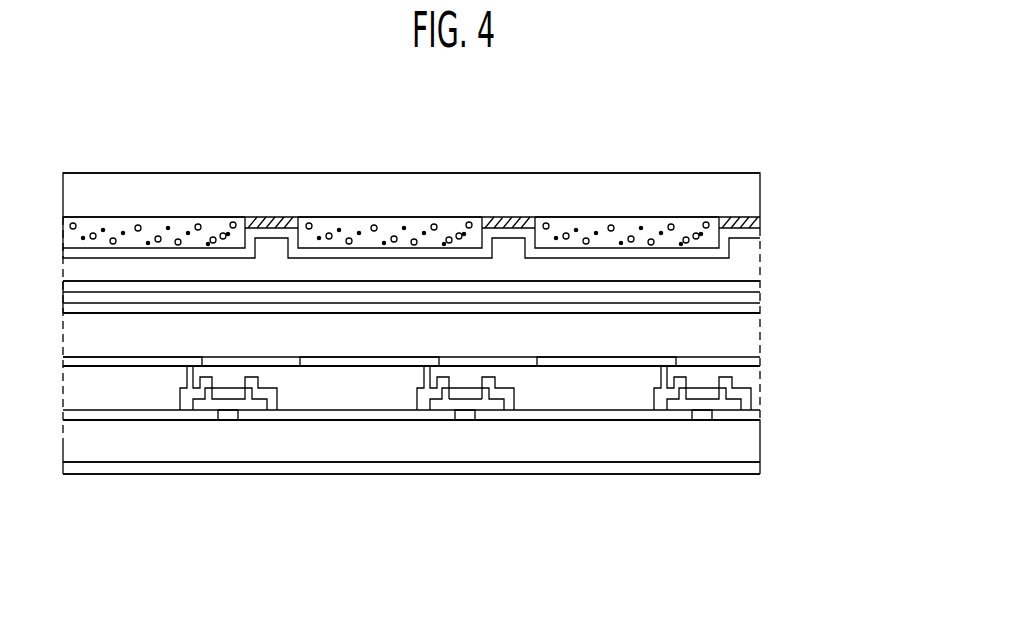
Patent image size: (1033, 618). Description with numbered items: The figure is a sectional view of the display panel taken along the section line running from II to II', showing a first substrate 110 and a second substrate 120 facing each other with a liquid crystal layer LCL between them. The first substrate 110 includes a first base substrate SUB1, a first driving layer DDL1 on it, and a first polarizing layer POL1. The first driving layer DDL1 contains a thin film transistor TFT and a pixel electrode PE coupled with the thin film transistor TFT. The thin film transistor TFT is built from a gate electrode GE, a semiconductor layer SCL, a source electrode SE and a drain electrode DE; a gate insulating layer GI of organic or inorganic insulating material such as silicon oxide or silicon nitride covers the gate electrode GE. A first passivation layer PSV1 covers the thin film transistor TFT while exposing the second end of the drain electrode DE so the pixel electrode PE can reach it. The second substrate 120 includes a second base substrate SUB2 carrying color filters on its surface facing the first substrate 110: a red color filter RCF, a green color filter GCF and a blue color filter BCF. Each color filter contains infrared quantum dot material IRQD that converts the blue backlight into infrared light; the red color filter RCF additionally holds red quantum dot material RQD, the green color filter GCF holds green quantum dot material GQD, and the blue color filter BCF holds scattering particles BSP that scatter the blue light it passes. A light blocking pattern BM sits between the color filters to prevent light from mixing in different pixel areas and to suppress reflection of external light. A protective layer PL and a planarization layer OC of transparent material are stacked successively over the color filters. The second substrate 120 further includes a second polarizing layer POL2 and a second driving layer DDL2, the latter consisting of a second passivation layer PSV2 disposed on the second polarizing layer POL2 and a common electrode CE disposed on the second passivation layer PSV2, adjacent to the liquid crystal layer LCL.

The second base substrate SUB2 is at (750, 193).
The protective layer PL is at (757, 231).
The light blocking pattern BM is at (270, 222).
The planarization layer OC is at (757, 251).
The red color filter RCF is at (113, 214).
The red quantum dot material RQD is at (148, 232).
The infrared quantum dot material IRQD is at (180, 228).
The green color filter GCF is at (347, 214).
The green quantum dot material GQD is at (382, 232).
The blue color filter BCF is at (583, 214).
The scattering particles BSP is at (620, 232).
The second polarizing layer POL2 is at (752, 287).
The second passivation layer PSV2 is at (752, 297).
The common electrode CE is at (752, 308).
The second driving layer DDL2 is at (835, 292).
The liquid crystal layer LCL is at (752, 348).
The pixel electrode PE is at (380, 357).
The first passivation layer PSV1 is at (752, 378).
The gate insulating layer GI is at (752, 412).
The first driving layer DDL1 is at (835, 372).
The first base substrate SUB1 is at (752, 438).
The first polarizing layer POL1 is at (752, 467).
The drain electrode DE is at (431, 402).
The semiconductor layer SCL is at (445, 401).
The gate electrode GE is at (465, 418).
The source electrode SE is at (511, 449).
The thin film transistor TFT is at (472, 465).
The second substrate 120 is at (58, 175).
The first substrate 110 is at (58, 357).
The section line II is at (64, 492).
The section line II' is at (763, 489).